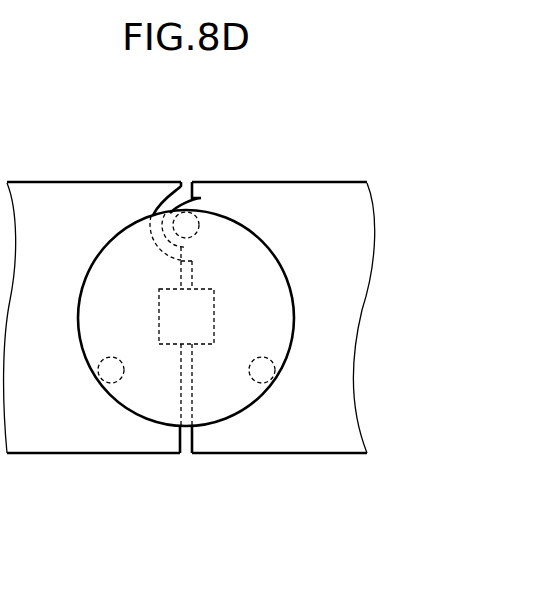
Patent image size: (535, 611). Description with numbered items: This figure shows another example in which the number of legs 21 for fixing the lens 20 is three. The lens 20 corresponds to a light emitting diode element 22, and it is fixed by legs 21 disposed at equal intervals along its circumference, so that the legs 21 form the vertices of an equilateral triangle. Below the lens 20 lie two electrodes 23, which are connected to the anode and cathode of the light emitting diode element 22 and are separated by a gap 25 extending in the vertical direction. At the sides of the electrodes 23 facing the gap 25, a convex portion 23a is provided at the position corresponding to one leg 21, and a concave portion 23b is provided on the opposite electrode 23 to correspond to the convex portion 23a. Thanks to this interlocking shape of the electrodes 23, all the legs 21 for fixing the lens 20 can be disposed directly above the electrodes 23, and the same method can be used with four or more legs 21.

The lens 20 is at (243, 224).
The legs 21 is at (196, 213).
The light emitting diode element 22 is at (207, 289).
The electrodes 23 is at (50, 455).
The convex portion 23a is at (185, 204).
The concave portion 23b is at (149, 212).
The gap 25 is at (183, 455).